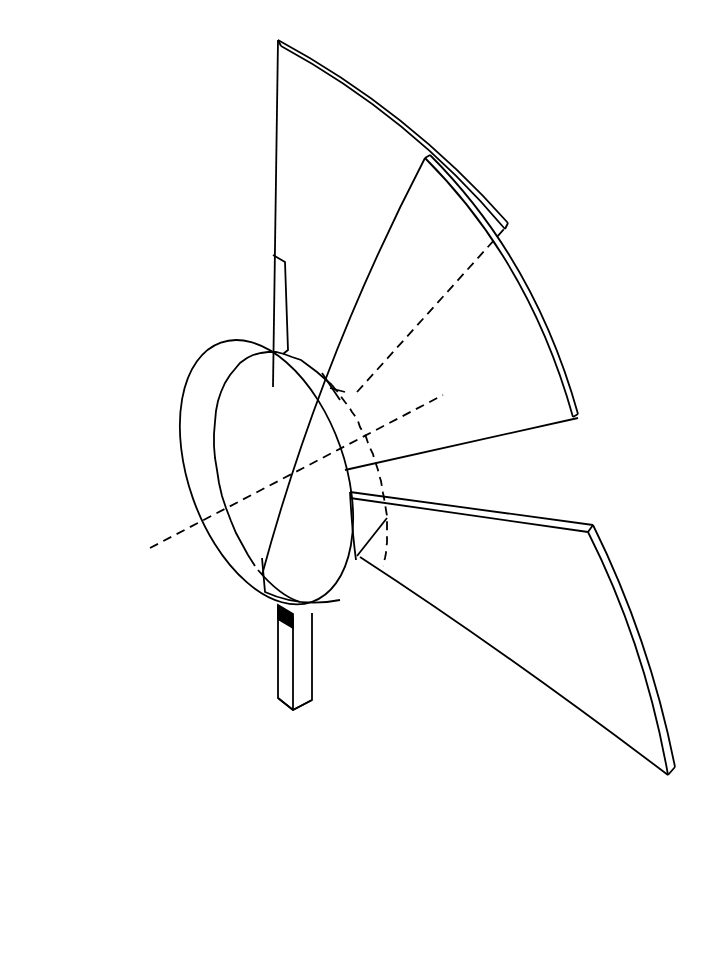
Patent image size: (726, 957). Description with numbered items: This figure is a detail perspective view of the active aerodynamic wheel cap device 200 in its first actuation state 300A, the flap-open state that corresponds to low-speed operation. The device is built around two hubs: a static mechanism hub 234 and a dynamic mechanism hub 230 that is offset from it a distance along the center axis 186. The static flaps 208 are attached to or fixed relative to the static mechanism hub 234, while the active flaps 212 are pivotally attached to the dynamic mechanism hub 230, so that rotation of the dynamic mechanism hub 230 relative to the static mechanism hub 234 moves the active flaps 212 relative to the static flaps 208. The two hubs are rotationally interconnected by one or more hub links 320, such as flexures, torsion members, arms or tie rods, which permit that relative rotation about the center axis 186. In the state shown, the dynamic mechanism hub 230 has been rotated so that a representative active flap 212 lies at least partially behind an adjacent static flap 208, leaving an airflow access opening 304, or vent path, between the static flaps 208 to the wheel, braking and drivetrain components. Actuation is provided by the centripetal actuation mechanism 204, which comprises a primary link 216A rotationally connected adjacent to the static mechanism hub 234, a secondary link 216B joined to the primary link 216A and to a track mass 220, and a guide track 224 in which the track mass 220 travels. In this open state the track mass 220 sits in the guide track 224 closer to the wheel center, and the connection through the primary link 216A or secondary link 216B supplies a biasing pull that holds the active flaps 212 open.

The active aerodynamic wheel cap device 200 is at (197, 198).
The first actuation state 300A is at (572, 129).
The active flap 212 is at (378, 106).
The static flap 208 is at (534, 307).
The airflow access opening 304 is at (534, 471).
The hub link 320 is at (376, 552).
The dynamic mechanism hub 230 is at (179, 413).
The static mechanism hub 234 is at (240, 346).
The center axis 186 is at (170, 536).
The primary link 216A is at (261, 562).
The secondary link 216B is at (268, 597).
The centripetal actuation mechanism 204 is at (326, 670).
The track mass 220 is at (284, 630).
The guide track 224 is at (290, 711).